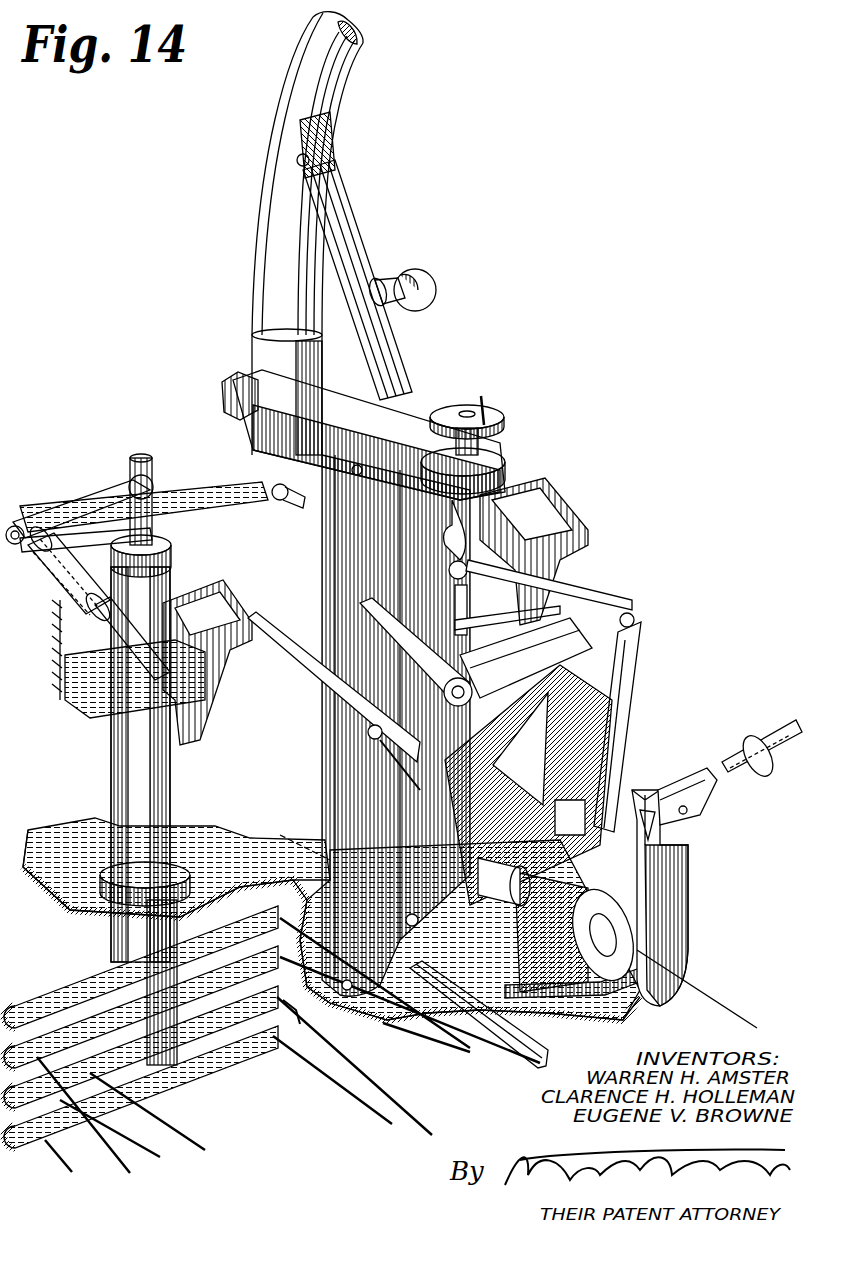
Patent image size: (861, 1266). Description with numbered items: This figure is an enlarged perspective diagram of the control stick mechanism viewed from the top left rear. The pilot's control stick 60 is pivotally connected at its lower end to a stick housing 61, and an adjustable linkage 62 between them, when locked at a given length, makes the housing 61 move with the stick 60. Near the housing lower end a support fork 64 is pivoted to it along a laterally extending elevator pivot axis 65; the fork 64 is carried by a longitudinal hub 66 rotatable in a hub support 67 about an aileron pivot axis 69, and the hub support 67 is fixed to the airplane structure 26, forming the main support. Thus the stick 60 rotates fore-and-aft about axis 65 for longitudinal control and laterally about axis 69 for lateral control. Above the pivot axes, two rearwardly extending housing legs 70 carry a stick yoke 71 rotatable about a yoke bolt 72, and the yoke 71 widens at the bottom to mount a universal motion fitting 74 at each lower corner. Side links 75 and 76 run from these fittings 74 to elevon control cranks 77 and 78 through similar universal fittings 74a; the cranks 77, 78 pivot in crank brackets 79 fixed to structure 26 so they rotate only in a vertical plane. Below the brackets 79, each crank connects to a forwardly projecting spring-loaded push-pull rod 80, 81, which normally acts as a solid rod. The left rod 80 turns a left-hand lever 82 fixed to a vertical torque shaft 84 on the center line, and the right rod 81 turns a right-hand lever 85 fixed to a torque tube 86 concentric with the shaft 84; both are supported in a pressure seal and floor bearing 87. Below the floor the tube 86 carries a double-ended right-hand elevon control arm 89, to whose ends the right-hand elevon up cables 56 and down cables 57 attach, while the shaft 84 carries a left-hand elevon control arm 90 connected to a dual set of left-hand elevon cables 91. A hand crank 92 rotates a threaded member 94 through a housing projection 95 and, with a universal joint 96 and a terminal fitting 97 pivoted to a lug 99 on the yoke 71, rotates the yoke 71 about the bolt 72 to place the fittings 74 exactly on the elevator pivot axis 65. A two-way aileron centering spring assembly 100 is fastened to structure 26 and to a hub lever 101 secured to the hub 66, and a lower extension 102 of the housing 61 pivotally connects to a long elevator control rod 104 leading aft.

The airplane structure 26 is at (512, 500).
The right-hand elevon up control cables 56 is at (440, 1045).
The right-hand elevon down cables 57 is at (168, 1146).
The control stick 60 is at (335, 88).
The stick housing 61 is at (327, 605).
The adjustable linkage 62 is at (378, 258).
The support fork 64 is at (330, 872).
The elevator pivot axis 65 is at (276, 832).
The hub 66 is at (470, 900).
The hub support 67 is at (588, 900).
The aileron pivot axis 69 is at (722, 1000).
The housing legs 70 is at (540, 680).
The stick yoke 71 is at (598, 714).
The yoke bolt 72 is at (450, 770).
The universal motion fitting 74 is at (572, 822).
The universal fitting 74a is at (640, 612).
The side link 75 is at (370, 766).
The side link 76 is at (642, 640).
The elevon control crank 77 is at (262, 622).
The elevon control crank 78 is at (580, 580).
The crank brackets 79 is at (540, 494).
The push-pull rod 80 is at (68, 626).
The push-pull rod 81 is at (278, 486).
The left-hand lever 82 is at (45, 512).
The torque shaft 84 is at (112, 532).
The right-hand lever 85 is at (188, 515).
The torque tube 86 is at (115, 745).
The pressure seal and floor bearing 87 is at (100, 855).
The right-hand elevon control arm 89 is at (80, 988).
The left-hand elevon control arm 90 is at (200, 1080).
The left-hand elevon cables 91 is at (380, 1092).
The hand crank 92 is at (488, 400).
The threaded member 94 is at (482, 428).
The housing projection 95 is at (492, 458).
The universal joint 96 is at (445, 540).
The terminal fitting 97 is at (470, 625).
The lug 99 is at (440, 620).
The aileron centering spring assembly 100 is at (752, 740).
The hub lever 101 is at (672, 900).
The lower extension 102 is at (290, 1040).
The elevator control rod 104 is at (520, 1058).